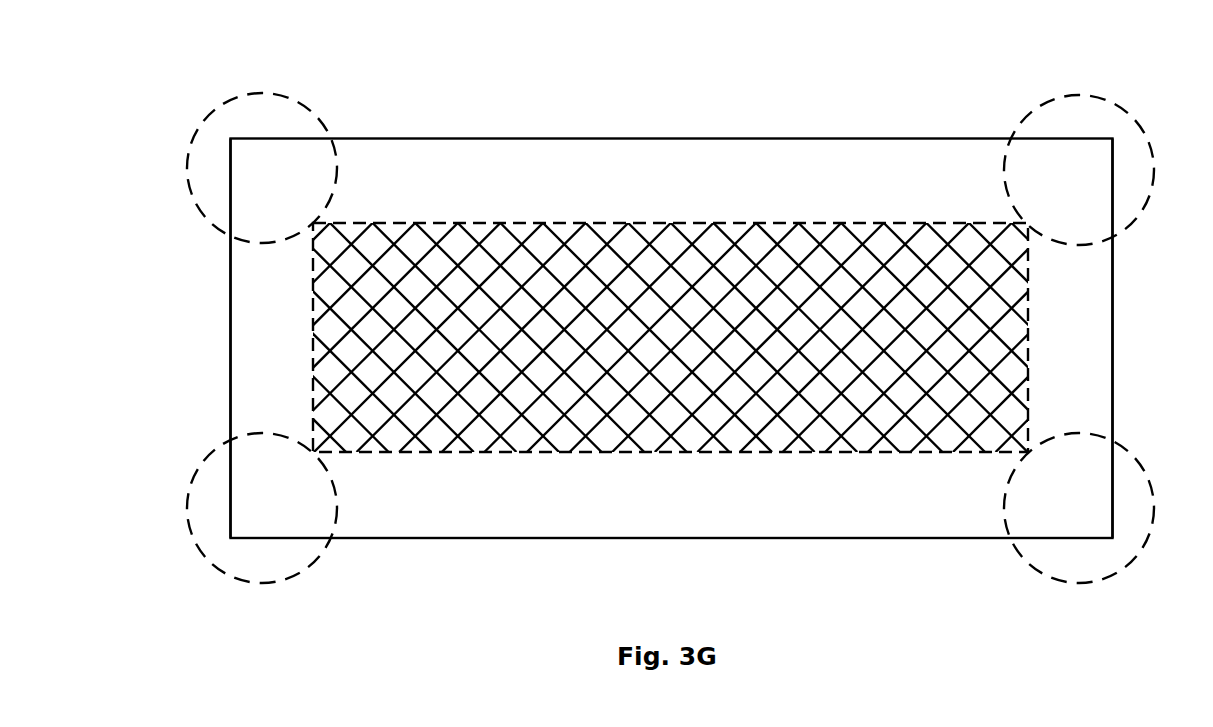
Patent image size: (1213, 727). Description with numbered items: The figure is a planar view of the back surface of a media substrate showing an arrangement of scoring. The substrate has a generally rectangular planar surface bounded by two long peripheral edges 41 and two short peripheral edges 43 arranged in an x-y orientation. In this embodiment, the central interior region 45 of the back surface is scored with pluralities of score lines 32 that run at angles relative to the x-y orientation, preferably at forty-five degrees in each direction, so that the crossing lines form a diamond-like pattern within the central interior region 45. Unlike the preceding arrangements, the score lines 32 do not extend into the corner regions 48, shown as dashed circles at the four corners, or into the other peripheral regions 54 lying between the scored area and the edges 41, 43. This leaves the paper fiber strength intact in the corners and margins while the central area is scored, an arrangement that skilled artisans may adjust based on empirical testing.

The long peripheral edge 41 is at (670, 138).
The short peripheral edge 43 is at (230, 345).
The central interior region 45 is at (562, 268).
The score lines 32 is at (867, 225).
The peripheral regions 54 is at (670, 331).
The corner regions 48 is at (262, 93).